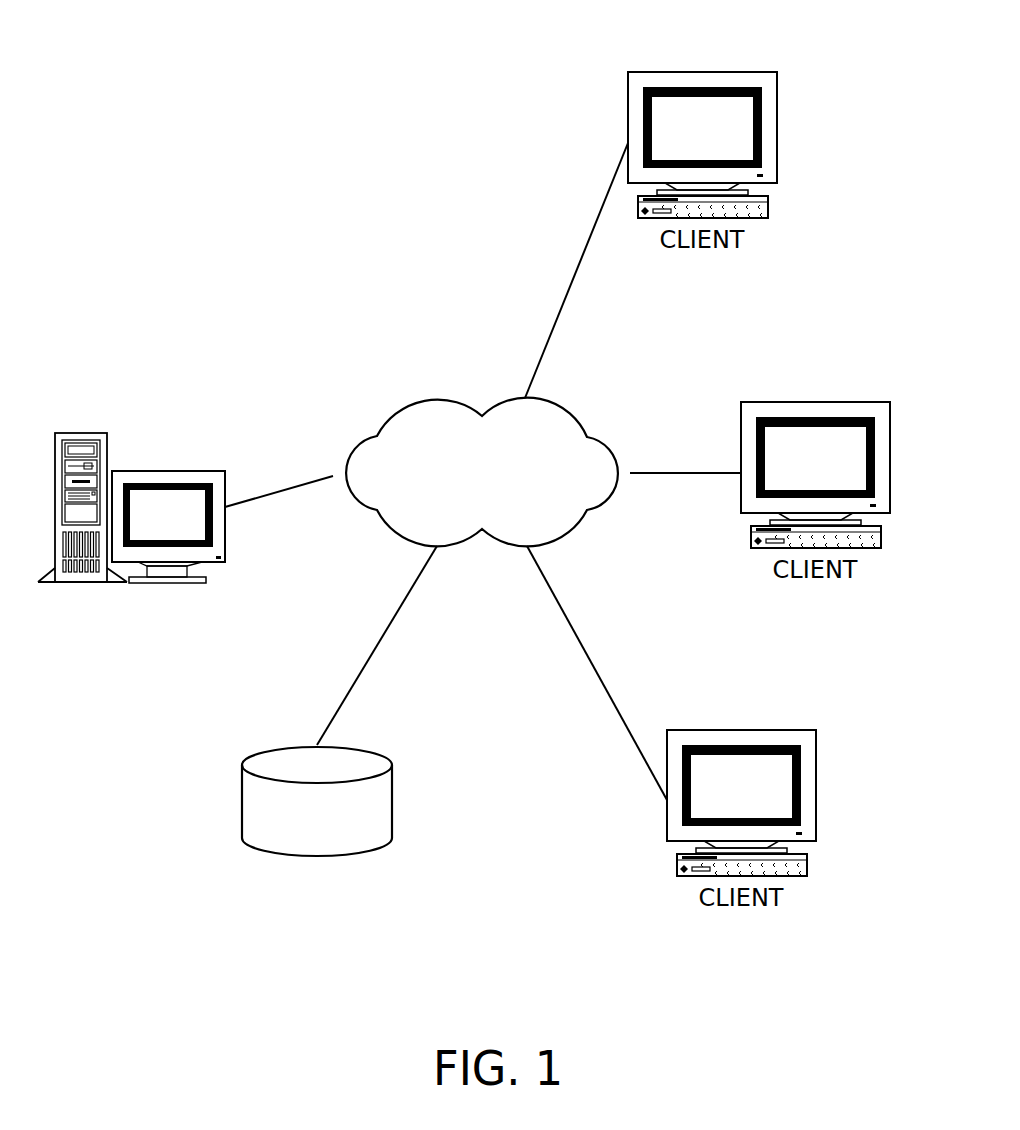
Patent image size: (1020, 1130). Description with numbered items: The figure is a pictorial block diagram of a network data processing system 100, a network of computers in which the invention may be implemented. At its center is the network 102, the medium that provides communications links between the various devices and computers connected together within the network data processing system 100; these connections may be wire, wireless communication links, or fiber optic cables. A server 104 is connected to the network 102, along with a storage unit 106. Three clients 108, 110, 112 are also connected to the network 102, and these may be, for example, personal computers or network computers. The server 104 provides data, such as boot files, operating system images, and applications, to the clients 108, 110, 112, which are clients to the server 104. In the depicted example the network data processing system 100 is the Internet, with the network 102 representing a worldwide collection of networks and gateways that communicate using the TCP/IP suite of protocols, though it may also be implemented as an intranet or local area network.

The network data processing system 100 is at (502, 807).
The network 102 is at (437, 399).
The server 104 is at (130, 477).
The storage unit 106 is at (298, 846).
The client 108 is at (638, 80).
The client 110 is at (749, 410).
The client 112 is at (807, 738).